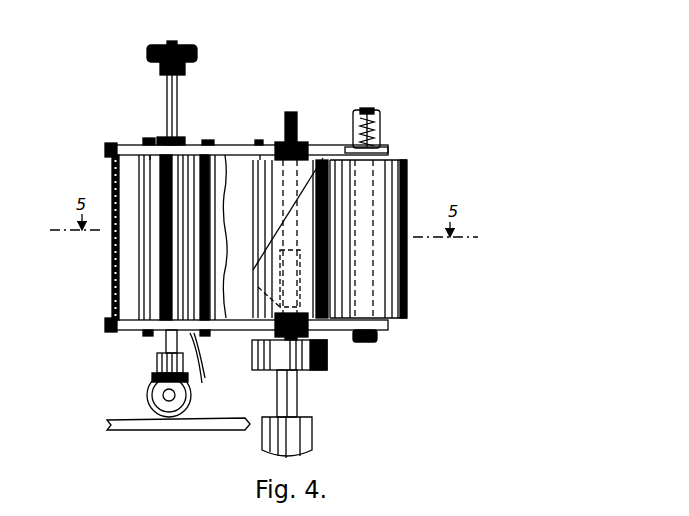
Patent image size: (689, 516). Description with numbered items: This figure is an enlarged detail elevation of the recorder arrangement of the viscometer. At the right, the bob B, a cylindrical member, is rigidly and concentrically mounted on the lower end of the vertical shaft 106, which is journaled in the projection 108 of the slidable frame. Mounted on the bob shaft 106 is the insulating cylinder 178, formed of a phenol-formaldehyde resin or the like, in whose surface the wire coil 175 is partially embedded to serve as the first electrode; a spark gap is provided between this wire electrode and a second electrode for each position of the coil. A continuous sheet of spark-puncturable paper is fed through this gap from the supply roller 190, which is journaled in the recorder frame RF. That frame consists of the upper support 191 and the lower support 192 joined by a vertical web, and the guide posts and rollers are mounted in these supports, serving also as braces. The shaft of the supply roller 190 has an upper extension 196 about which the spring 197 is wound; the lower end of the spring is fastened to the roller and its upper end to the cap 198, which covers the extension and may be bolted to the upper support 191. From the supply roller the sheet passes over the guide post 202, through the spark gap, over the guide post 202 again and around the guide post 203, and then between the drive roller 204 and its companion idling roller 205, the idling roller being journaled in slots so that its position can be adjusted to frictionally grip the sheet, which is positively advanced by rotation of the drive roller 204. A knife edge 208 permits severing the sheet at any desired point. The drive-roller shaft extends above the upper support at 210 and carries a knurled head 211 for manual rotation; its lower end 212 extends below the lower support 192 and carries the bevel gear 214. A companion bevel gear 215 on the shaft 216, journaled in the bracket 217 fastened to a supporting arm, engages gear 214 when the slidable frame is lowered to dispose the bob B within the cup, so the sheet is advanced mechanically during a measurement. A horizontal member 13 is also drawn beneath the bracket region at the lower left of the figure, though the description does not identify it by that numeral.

The rail 13 is at (110, 418).
The bob shaft 106 is at (298, 395).
The projection 108 is at (328, 358).
The wire coil 175 is at (285, 236).
The insulating cylinder 178 is at (262, 250).
The supply roller 190 is at (408, 193).
The upper support 191 is at (130, 143).
The lower support 192 is at (116, 328).
The upper extension 196 is at (383, 115).
The spring 197 is at (381, 128).
The cap 198 is at (365, 110).
The guide post 202 is at (305, 152).
The guide post 203 is at (228, 160).
The drive roller 204 is at (190, 162).
The idling roller 205 is at (140, 280).
The knife edge 208 is at (112, 252).
The drive-roller shaft upper extension 210 is at (167, 98).
The knurled head 211 is at (178, 45).
The lower end of drive-roller shaft 212 is at (165, 340).
The bevel gear 214 is at (157, 372).
The companion bevel gear 215 is at (160, 402).
The shaft 216 is at (168, 402).
The bracket 217 is at (203, 372).
The bob B is at (312, 440).
The recorder frame RF is at (101, 162).